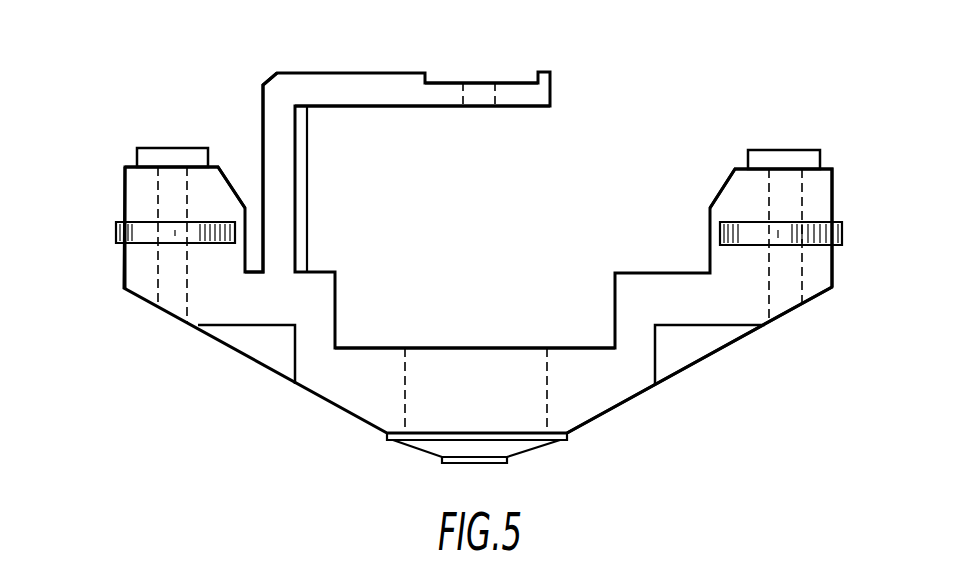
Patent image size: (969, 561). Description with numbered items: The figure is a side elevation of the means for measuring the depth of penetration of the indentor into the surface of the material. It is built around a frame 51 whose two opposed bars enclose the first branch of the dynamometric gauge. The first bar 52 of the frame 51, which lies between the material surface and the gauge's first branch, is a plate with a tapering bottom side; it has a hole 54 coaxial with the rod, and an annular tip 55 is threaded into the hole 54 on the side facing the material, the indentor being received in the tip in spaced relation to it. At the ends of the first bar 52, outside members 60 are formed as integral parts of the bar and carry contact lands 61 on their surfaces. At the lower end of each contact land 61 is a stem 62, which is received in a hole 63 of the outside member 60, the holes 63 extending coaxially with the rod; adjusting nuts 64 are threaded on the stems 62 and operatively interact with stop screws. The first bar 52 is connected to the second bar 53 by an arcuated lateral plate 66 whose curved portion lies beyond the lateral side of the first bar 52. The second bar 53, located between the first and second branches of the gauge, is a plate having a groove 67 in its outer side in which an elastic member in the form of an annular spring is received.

The frame 51 is at (318, 400).
The first bar 52 is at (584, 380).
The second bar 53 is at (396, 92).
The hole 54 is at (407, 378).
The annular tip 55 is at (517, 448).
The outside member 60 is at (732, 308).
The contact land 61 is at (165, 148).
The stem 62 is at (165, 205).
The hole 63 is at (158, 185).
The adjusting nut 64 is at (122, 234).
The arcuated lateral plate 66 is at (273, 205).
The groove 67 is at (508, 83).